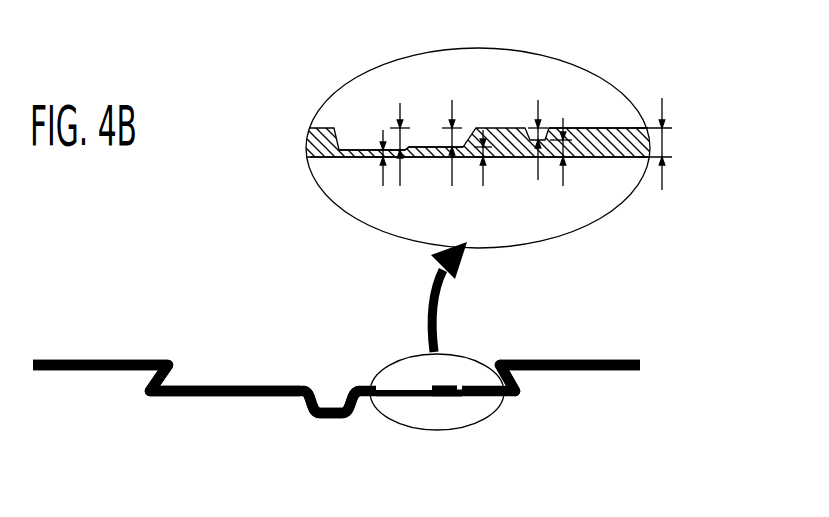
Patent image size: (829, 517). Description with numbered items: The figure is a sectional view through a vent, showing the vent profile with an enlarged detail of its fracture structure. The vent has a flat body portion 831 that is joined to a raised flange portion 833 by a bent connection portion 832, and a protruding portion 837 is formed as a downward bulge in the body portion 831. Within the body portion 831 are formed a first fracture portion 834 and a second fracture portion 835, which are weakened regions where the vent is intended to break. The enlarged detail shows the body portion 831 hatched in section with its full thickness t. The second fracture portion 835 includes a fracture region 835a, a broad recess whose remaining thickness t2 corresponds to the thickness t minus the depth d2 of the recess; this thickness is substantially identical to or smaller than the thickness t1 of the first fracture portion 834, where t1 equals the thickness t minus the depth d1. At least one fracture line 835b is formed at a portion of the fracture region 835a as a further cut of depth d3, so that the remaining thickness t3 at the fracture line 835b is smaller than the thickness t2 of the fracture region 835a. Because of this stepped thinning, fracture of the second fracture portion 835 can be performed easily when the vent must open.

The body portion 831 is at (516, 160).
The connection portion 832 is at (521, 378).
The flange portion 833 is at (572, 359).
The first fracture portion 834 is at (556, 128).
The second fracture portion 835 is at (410, 299).
The fracture region 835a is at (362, 132).
The fracture line 835b is at (410, 149).
The protruding portion 837 is at (322, 418).
The depth of the first fracture portion d1 is at (537, 125).
The depth of the second fracture portion d2 is at (452, 120).
The depth of the fracture line d3 is at (399, 128).
The thickness of the body portion t is at (658, 144).
The thickness of the first fracture portion t1 is at (563, 186).
The thickness of the fracture region t2 is at (483, 186).
The thickness of the fracture line t3 is at (383, 180).